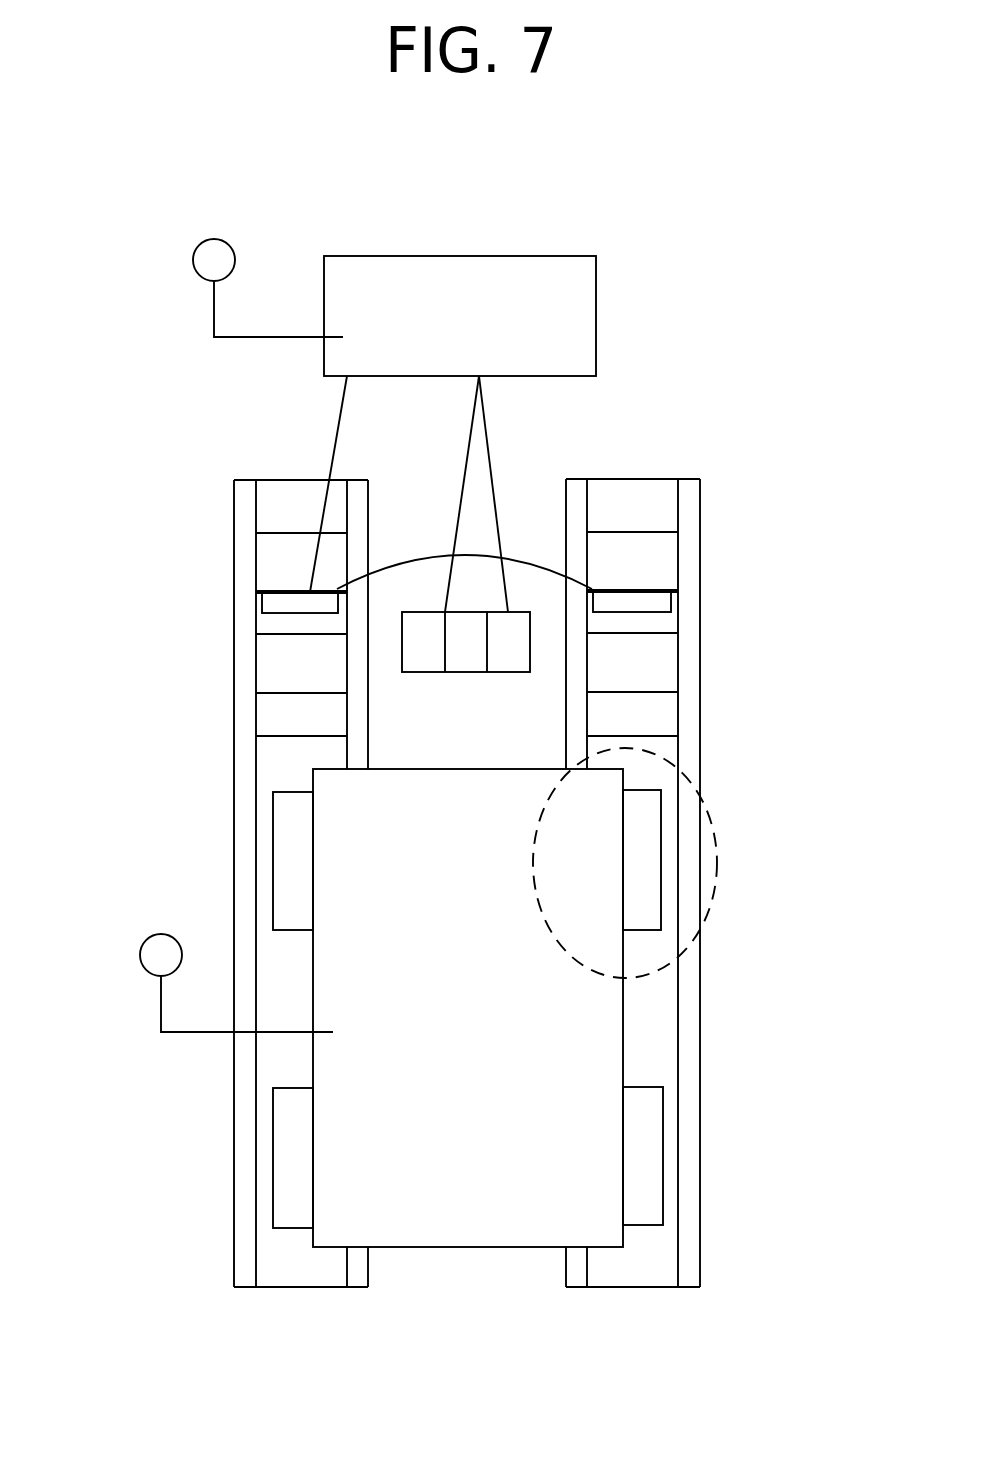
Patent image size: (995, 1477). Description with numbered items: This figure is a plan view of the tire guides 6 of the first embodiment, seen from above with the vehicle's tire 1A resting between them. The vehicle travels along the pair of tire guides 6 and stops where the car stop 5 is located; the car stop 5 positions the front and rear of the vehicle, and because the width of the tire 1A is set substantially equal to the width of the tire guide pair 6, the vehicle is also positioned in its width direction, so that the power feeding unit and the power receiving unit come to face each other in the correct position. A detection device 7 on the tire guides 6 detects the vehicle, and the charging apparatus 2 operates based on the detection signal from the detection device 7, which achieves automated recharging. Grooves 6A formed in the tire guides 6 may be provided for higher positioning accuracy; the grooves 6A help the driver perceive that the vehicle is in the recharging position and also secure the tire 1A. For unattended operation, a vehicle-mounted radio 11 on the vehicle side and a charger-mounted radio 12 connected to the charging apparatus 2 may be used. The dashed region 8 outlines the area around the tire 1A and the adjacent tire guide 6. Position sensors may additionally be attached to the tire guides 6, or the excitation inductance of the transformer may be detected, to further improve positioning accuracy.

The tire 1A is at (645, 910).
The charging apparatus 2 is at (560, 293).
The car stop 5 is at (287, 560).
The tire guides 6 is at (623, 1262).
The grooves 6A is at (278, 672).
The detection device 7 is at (275, 601).
The detection region 8 is at (715, 828).
The vehicle-mounted radio 11 is at (158, 955).
The charger-mounted radio 12 is at (208, 262).